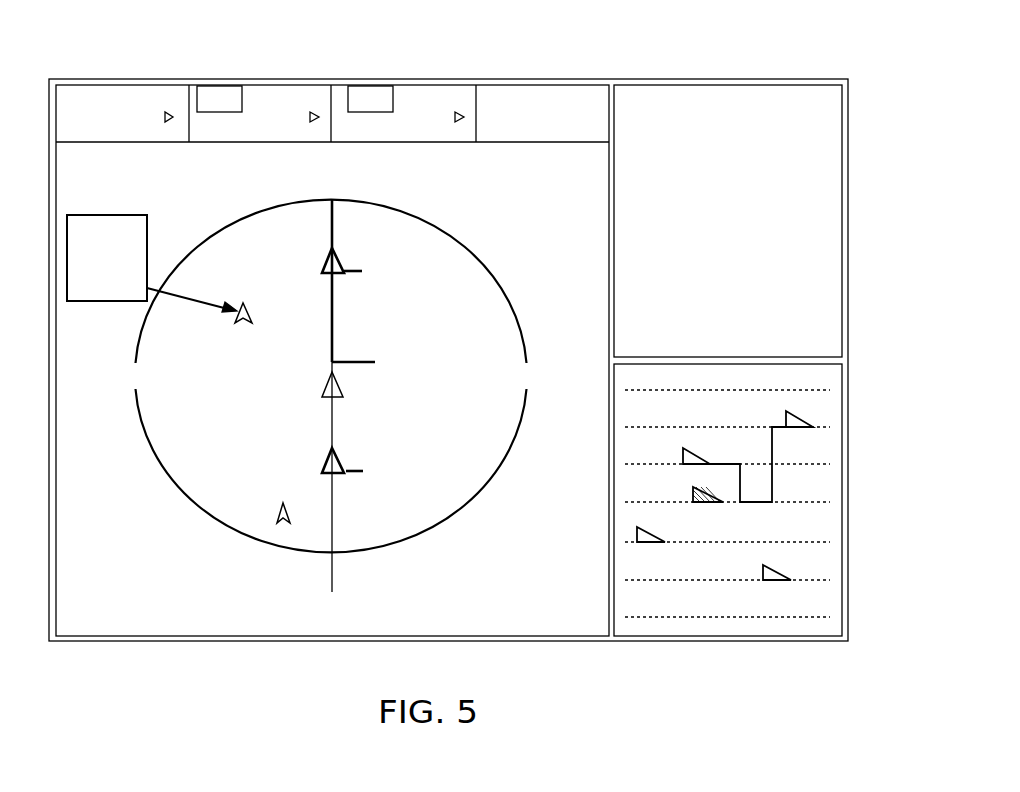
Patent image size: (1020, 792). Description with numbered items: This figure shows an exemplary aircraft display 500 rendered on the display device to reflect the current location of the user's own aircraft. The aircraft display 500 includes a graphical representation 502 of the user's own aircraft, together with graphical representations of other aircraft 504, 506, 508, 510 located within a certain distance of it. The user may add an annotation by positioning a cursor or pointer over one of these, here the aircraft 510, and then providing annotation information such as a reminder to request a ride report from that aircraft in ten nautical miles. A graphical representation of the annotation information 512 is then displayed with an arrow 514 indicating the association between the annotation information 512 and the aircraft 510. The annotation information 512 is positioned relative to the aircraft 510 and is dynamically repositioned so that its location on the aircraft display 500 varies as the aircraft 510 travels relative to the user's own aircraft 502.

The aircraft display 500 is at (582, 60).
The graphical representation of the aircraft 502 is at (322, 394).
The other aircraft 504 is at (340, 258).
The other aircraft 506 is at (341, 460).
The other aircraft 508 is at (277, 508).
The identified aircraft 510 is at (255, 314).
The annotation information 512 is at (106, 215).
The arrow 514 is at (197, 303).